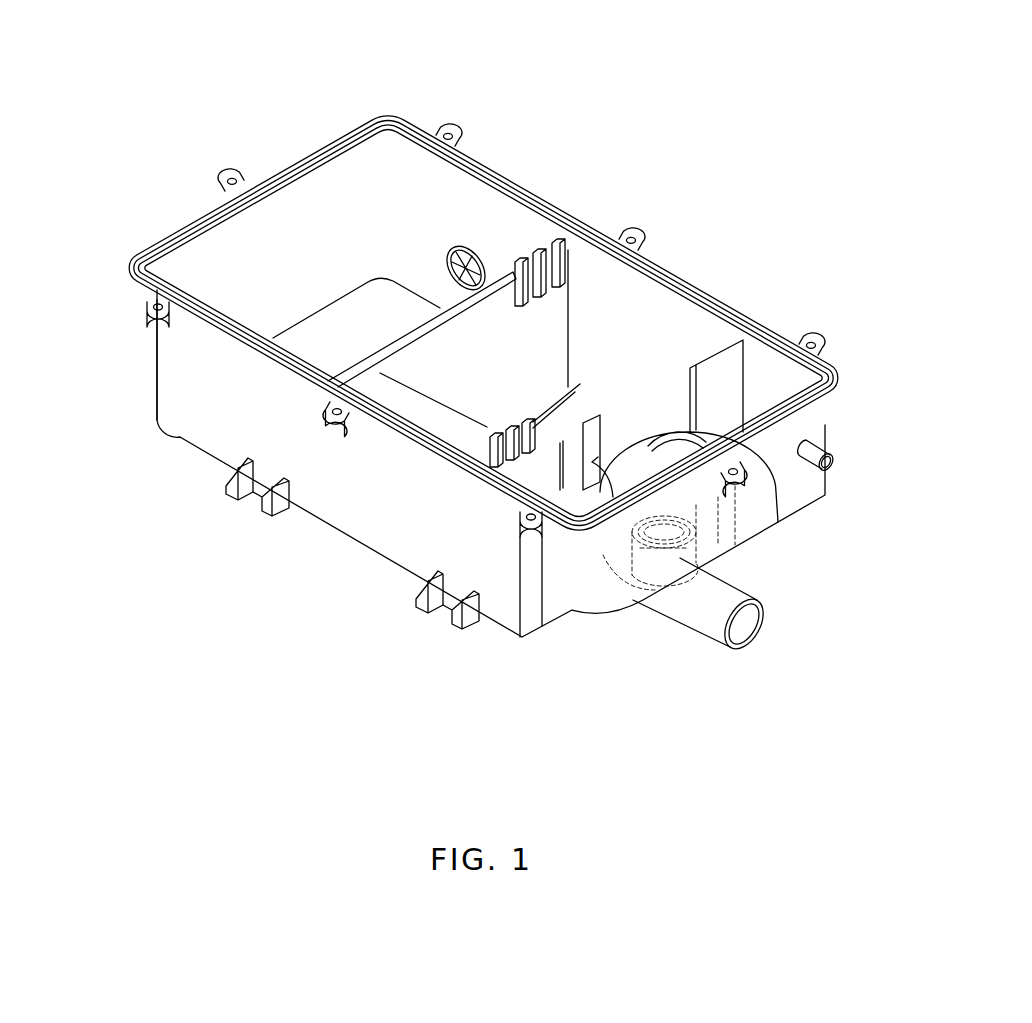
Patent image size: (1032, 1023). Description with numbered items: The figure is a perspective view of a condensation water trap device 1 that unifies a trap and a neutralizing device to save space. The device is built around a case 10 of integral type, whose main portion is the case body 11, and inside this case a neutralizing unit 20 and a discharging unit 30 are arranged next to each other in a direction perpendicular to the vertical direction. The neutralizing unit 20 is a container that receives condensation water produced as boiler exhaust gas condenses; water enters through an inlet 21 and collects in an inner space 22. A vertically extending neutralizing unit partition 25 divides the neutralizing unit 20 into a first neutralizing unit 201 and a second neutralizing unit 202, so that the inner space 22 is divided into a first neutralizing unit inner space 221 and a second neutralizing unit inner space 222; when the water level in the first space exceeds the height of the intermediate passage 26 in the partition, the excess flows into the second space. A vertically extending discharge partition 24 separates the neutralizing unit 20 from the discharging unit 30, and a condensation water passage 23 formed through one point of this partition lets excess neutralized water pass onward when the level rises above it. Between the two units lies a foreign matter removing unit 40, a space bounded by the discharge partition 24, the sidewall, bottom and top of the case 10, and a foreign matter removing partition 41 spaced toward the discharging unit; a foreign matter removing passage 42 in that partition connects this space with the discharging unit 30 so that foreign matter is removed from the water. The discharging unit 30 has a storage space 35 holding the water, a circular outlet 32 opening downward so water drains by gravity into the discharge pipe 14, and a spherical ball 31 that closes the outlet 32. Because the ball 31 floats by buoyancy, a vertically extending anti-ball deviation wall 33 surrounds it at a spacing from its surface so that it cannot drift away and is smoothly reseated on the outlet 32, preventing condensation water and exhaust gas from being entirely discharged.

The condensation water trap device 1 is at (315, 645).
The case 10 is at (849, 386).
The case body 11 is at (172, 357).
The discharge pipe 14 is at (757, 597).
The neutralizing unit 20 is at (566, 47).
The first neutralizing unit 201 is at (392, 198).
The second neutralizing unit 202 is at (606, 293).
The inlet 21 is at (455, 250).
The inner space 22 is at (326, 443).
The first neutralizing unit inner space 221 is at (303, 263).
The second neutralizing unit inner space 222 is at (623, 330).
The condensation water passage 23 is at (500, 440).
The discharge partition 24 is at (703, 353).
The neutralizing unit partition 25 is at (377, 352).
The intermediate passage 26 is at (540, 245).
The discharging unit 30 is at (754, 456).
The ball 31 is at (683, 547).
The outlet 32 is at (720, 548).
The anti-ball deviation wall 33 is at (783, 478).
The storage space 35 is at (818, 393).
The foreign matter removing unit 40 is at (751, 393).
The foreign matter removing partition 41 is at (755, 384).
The foreign matter removing passage 42 is at (571, 468).